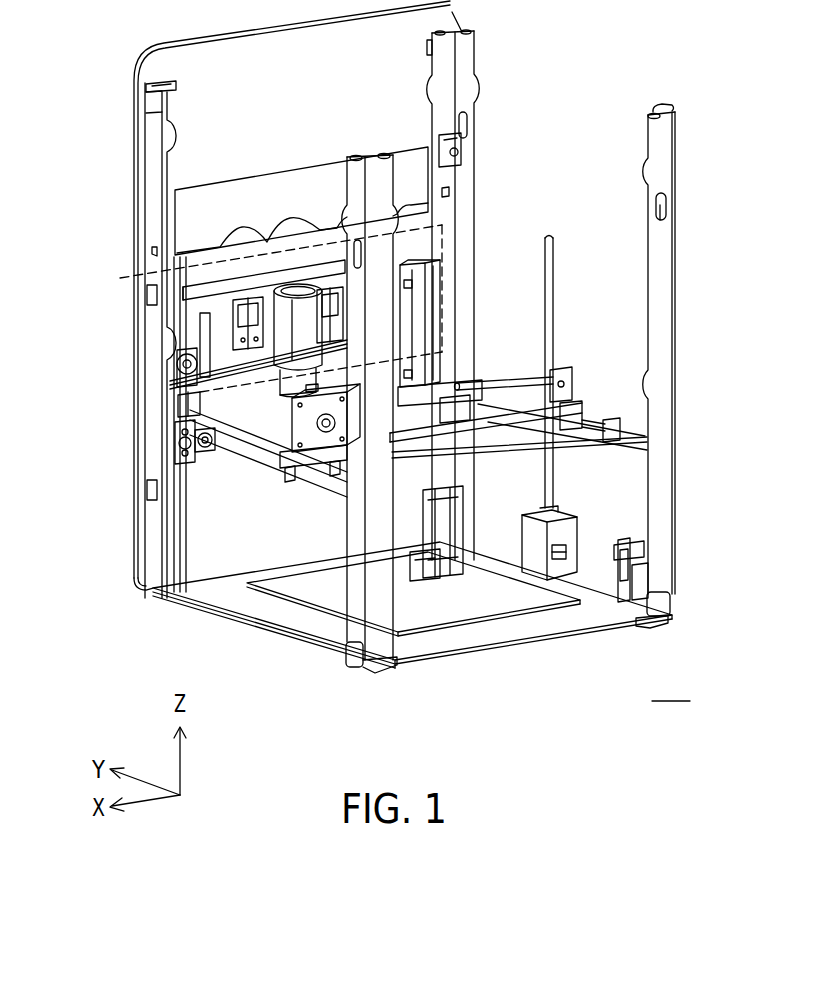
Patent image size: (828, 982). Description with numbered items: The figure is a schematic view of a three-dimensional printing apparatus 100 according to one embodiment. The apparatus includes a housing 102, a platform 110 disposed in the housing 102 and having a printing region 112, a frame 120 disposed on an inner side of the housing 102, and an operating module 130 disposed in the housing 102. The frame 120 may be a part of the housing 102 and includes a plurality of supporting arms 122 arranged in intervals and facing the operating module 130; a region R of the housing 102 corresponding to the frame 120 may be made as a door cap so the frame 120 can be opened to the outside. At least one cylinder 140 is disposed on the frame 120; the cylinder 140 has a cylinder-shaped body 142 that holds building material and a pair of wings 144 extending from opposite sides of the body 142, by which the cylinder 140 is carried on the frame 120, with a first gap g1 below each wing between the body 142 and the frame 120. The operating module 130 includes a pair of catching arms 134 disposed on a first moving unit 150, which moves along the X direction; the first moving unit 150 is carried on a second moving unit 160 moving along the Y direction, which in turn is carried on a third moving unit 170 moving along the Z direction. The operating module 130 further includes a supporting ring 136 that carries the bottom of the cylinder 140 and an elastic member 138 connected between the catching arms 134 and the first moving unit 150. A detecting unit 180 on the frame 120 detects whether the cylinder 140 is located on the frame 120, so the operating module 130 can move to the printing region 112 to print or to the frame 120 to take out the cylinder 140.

The three-dimensional printing apparatus 100 is at (417, 357).
The housing 102 is at (122, 249).
The platform 110 is at (283, 617).
The printing region 112 is at (280, 588).
The frame 120 is at (187, 333).
The supporting arms 122 is at (185, 371).
The operating module 130 is at (555, 686).
The catching arms 134 is at (430, 548).
The supporting ring 136 is at (410, 570).
The elastic member 138 is at (517, 570).
The cylinder 140 is at (325, 133).
The body 142 is at (295, 310).
The wings 144 is at (267, 287).
The first moving unit 150 is at (468, 415).
The second moving unit 160 is at (293, 438).
The third moving unit 170 is at (178, 425).
The detecting unit 180 is at (400, 291).
The region R is at (272, 308).
The first gap g1 is at (272, 373).